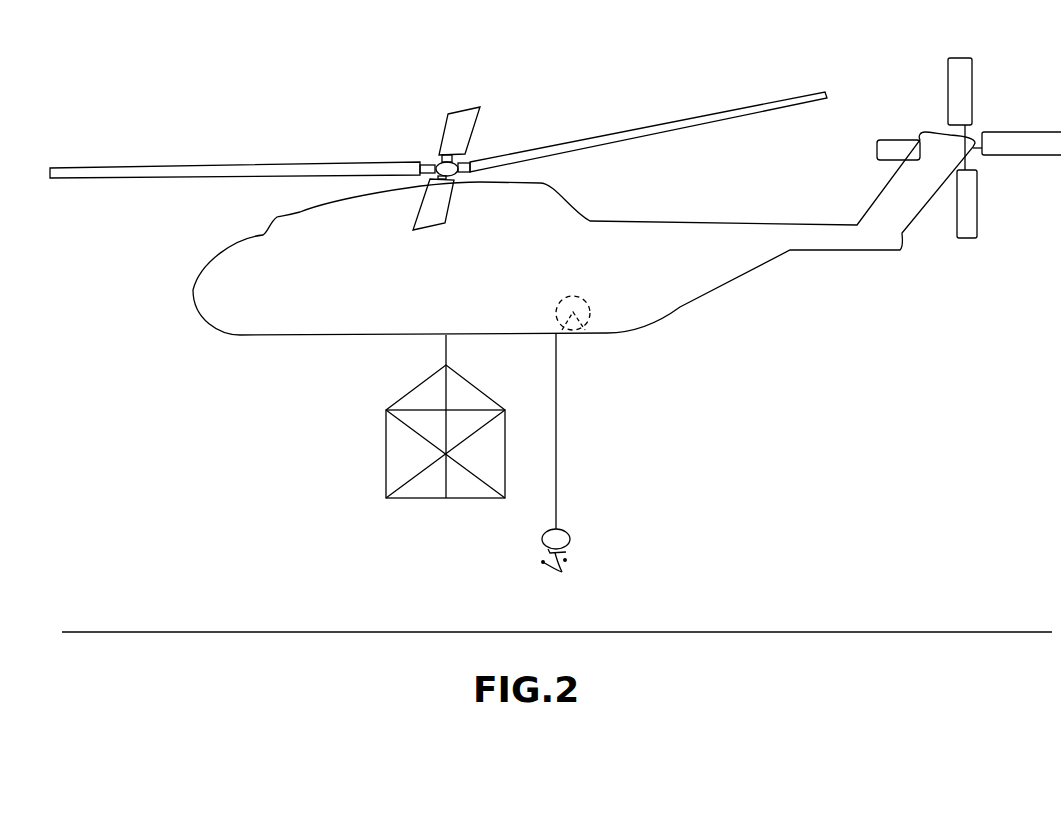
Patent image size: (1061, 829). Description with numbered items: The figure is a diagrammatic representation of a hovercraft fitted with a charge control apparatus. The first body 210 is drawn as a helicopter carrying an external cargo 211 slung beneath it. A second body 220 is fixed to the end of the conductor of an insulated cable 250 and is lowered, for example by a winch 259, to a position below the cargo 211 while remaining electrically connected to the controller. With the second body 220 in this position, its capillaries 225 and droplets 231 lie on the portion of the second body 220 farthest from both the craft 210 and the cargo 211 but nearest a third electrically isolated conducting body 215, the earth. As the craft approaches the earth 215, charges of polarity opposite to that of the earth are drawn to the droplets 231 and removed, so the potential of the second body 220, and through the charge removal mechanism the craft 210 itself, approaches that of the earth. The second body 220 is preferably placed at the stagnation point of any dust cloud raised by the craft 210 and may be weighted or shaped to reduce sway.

The first body 210 is at (658, 220).
The external cargo 211 is at (386, 468).
The insulated cable 250 is at (557, 410).
The winch 259 is at (578, 322).
The second body 220 is at (570, 530).
The capillaries 225 is at (568, 550).
The droplets 231 is at (574, 570).
The third electrically isolated conducting body 215 is at (914, 632).